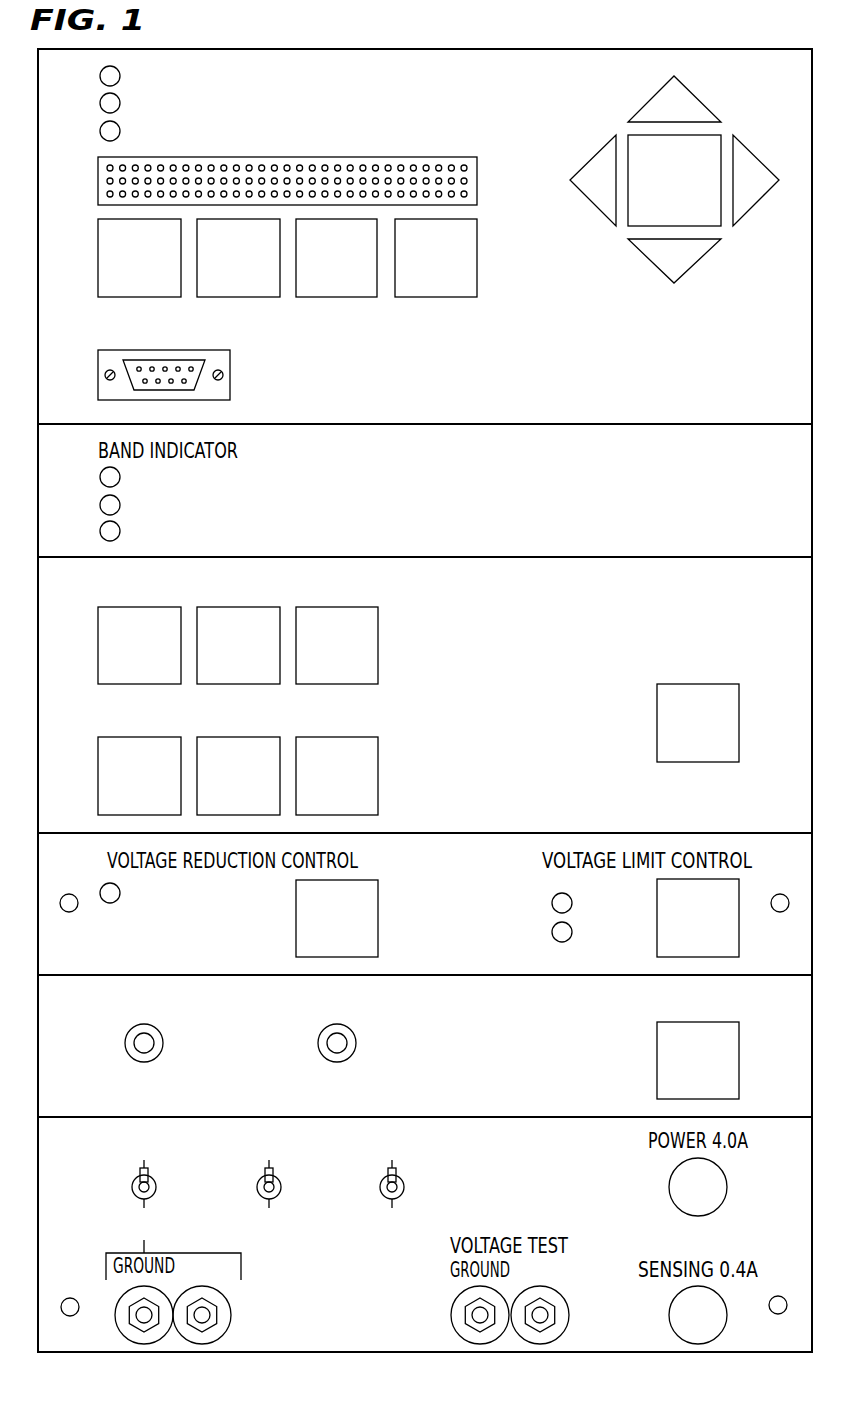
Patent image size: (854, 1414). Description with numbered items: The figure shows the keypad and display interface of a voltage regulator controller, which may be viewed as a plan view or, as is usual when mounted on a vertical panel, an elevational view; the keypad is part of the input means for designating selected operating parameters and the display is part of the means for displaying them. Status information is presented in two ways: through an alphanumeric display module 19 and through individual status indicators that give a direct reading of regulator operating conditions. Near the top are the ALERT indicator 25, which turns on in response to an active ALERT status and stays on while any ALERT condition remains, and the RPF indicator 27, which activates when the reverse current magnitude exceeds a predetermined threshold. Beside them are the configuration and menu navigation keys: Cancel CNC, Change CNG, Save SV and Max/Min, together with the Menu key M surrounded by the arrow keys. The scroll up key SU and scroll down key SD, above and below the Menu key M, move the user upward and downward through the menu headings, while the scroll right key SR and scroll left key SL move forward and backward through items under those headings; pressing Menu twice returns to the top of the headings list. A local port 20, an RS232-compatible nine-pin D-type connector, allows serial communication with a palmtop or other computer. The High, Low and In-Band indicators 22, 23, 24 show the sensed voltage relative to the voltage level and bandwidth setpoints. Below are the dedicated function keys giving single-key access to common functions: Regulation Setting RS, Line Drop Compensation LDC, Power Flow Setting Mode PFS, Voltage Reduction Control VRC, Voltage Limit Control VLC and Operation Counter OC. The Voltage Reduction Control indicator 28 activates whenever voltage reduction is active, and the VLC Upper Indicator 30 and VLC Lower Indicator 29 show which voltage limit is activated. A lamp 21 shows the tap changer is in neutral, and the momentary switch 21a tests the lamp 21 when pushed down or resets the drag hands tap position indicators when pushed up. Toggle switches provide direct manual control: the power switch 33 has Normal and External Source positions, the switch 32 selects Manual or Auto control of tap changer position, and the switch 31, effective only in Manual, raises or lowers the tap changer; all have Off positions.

The alphanumeric display module 19 is at (497, 175).
The local port 20 is at (248, 375).
The lamp 21 is at (128, 1053).
The momentary switch 21a is at (357, 1038).
The High indicator 22 is at (100, 479).
The Low indicator 23 is at (100, 529).
The In-Band indicator 24 is at (100, 507).
The ALERT indicator 25 is at (100, 76).
The RPF indicator 27 is at (100, 103).
The Voltage Reduction Control indicator 28 is at (110, 903).
The VLC Lower Indicator 29 is at (100, 131).
The VLC Upper Indicator 30 is at (552, 905).
The toggle switch 31 is at (403, 1180).
The toggle switch 32 is at (280, 1180).
The toggle switch 33 is at (132, 1187).
The Cancel key CNC is at (98, 258).
The Change key CNG is at (238, 298).
The Save key SV is at (341, 298).
The Menu key M is at (628, 225).
The scroll up key SU is at (652, 97).
The scroll down key SD is at (697, 262).
The scroll left key SL is at (598, 153).
The scroll right key SR is at (768, 192).
The Regulation Setting key RS is at (404, 654).
The Line Drop Compensation key LDC is at (404, 762).
The Power Flow Setting Mode key PFS is at (644, 716).
The Voltage Reduction Control key VRC is at (398, 913).
The Voltage Limit Control key VLC is at (756, 931).
The Operation Counter key OC is at (754, 1042).